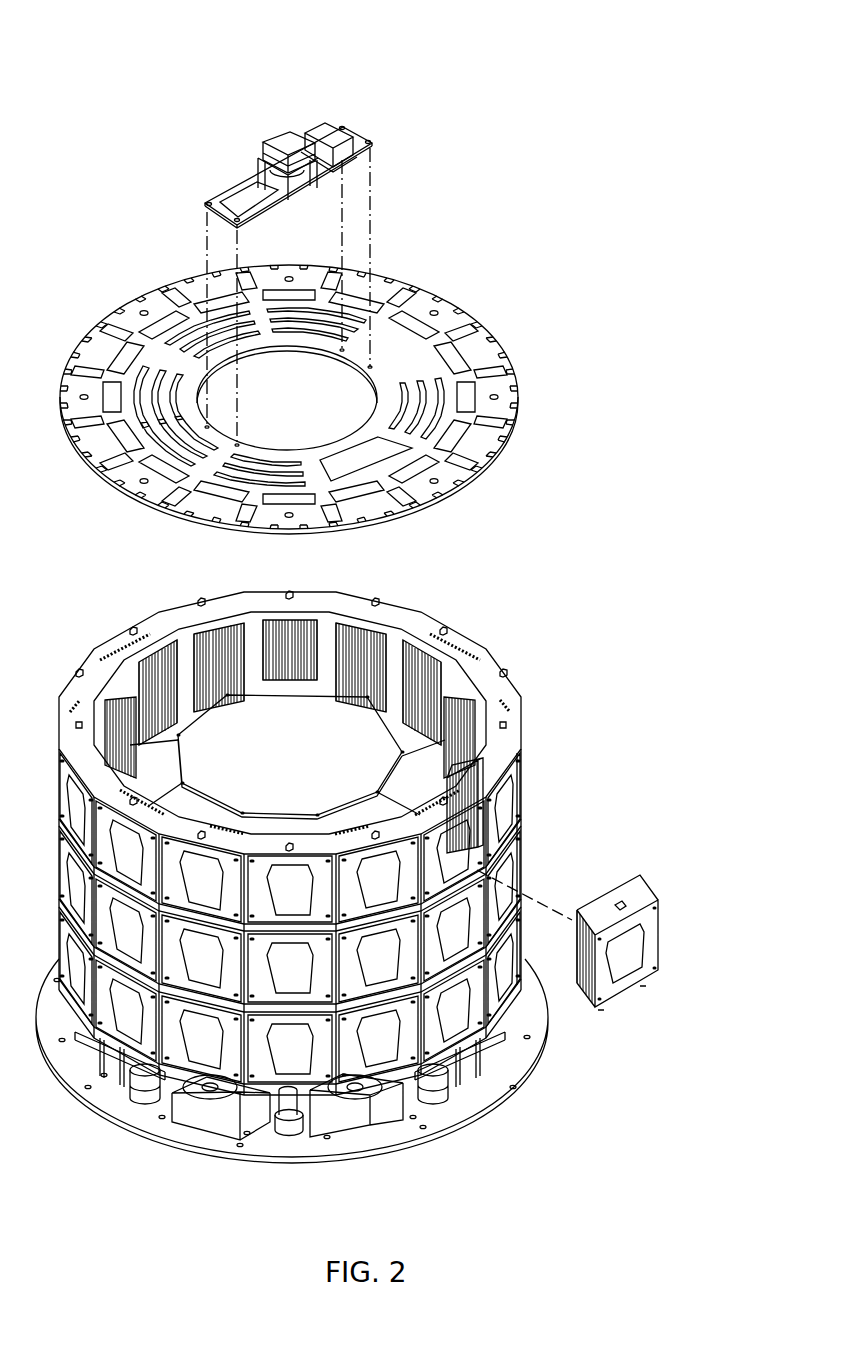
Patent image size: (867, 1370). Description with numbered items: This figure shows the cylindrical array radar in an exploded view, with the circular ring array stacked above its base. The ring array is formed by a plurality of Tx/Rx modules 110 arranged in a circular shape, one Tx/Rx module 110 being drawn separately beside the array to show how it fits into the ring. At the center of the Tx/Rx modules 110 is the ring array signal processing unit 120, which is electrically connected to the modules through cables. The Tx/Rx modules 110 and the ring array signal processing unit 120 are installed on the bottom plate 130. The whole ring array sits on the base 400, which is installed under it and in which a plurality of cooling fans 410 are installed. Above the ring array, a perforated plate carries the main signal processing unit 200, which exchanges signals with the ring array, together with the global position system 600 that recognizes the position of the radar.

The Tx/Rx module 110 is at (639, 884).
The ring array signal processing unit 120 is at (228, 747).
The bottom plate 130 is at (445, 872).
The main signal processing unit 200 is at (327, 126).
The base 400 is at (160, 1138).
The cooling fan 410 is at (375, 1118).
The global position system (GPS) 600 is at (275, 138).